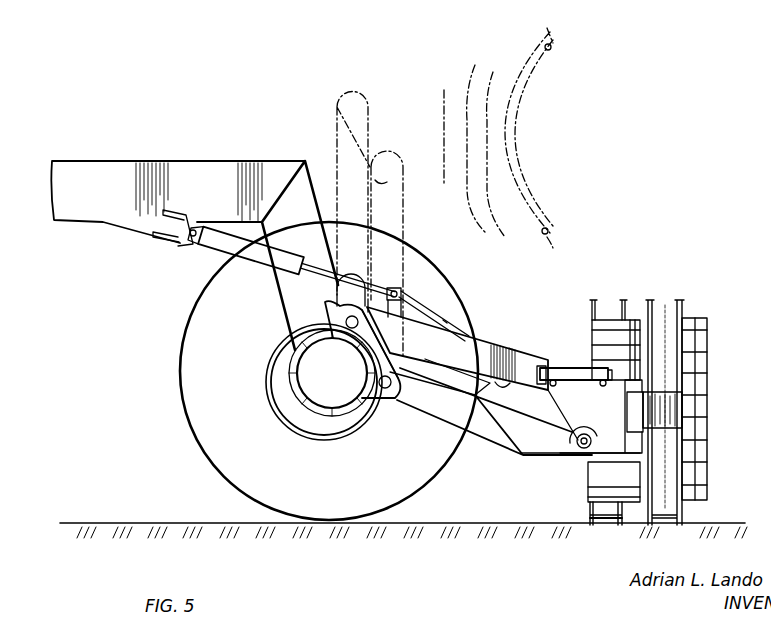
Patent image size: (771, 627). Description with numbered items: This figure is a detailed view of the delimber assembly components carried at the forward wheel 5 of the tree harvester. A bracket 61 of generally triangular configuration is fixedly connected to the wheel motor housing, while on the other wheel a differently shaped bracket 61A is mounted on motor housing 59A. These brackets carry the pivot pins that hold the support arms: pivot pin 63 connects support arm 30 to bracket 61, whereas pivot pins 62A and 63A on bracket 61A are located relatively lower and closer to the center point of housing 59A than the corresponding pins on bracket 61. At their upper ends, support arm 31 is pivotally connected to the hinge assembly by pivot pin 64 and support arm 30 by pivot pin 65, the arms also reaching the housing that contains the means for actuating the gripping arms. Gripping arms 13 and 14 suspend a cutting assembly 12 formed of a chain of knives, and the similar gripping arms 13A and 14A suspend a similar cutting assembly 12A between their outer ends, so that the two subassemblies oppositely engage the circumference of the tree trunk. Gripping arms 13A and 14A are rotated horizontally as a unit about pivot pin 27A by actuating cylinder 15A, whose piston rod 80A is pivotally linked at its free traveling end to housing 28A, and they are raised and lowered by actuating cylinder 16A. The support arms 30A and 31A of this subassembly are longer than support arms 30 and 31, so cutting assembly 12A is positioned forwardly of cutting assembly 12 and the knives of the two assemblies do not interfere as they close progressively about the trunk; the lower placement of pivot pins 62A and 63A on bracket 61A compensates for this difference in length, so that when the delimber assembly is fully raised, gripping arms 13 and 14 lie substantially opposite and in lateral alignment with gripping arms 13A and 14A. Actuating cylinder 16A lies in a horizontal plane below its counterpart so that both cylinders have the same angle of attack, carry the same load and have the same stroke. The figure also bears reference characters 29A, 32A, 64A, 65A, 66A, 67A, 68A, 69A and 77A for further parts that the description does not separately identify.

The forward wheel 5 is at (181, 403).
The cutting assembly 12 is at (590, 498).
The cutting assembly 12A is at (530, 93).
The gripping arm 13 is at (595, 301).
The gripping arm 13A is at (502, 35).
The gripping arm 14 is at (607, 518).
The gripping arm 14A is at (466, 198).
The actuating cylinder 15A is at (576, 368).
The actuating cylinder 16A is at (215, 252).
The pivot pin 27A is at (633, 366).
The housing 28A is at (388, 120).
The member 29A is at (421, 95).
The support arm 30 is at (447, 325).
The support arm 30A is at (505, 356).
The support arm 31 is at (483, 428).
The support arm 31A is at (452, 420).
The frame 32A is at (152, 162).
The motor housing 59A is at (292, 381).
The bracket 61 is at (330, 313).
The bracket 61A is at (389, 352).
The pivot pin 62A is at (398, 402).
The pivot pin 63 is at (337, 296).
The pivot pin 63A is at (348, 330).
The pivot pin 64 is at (520, 456).
The pivot pin 64A is at (583, 449).
The pivot pin 65 is at (499, 392).
The fastener 65A is at (560, 385).
The hydraulic cylinder 66A is at (322, 270).
The pivot pin 67A is at (397, 287).
The link 68A is at (401, 292).
The link end 69A is at (443, 320).
The triangular bracket 77A is at (305, 160).
The piston rod 80A is at (612, 368).